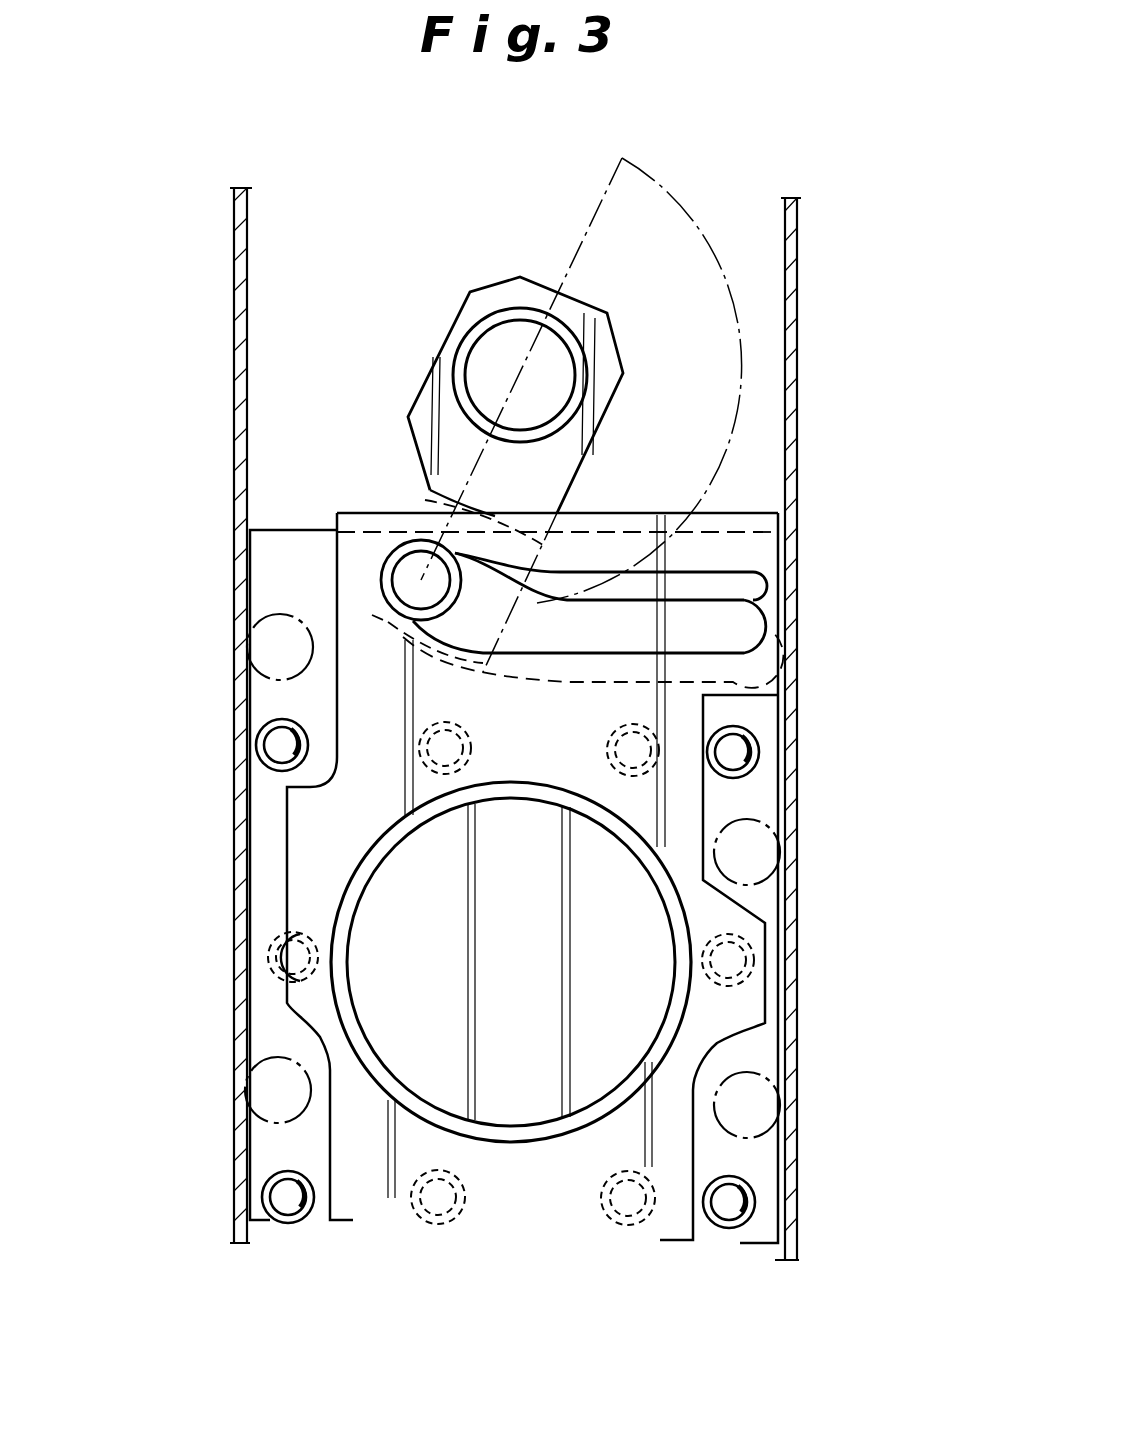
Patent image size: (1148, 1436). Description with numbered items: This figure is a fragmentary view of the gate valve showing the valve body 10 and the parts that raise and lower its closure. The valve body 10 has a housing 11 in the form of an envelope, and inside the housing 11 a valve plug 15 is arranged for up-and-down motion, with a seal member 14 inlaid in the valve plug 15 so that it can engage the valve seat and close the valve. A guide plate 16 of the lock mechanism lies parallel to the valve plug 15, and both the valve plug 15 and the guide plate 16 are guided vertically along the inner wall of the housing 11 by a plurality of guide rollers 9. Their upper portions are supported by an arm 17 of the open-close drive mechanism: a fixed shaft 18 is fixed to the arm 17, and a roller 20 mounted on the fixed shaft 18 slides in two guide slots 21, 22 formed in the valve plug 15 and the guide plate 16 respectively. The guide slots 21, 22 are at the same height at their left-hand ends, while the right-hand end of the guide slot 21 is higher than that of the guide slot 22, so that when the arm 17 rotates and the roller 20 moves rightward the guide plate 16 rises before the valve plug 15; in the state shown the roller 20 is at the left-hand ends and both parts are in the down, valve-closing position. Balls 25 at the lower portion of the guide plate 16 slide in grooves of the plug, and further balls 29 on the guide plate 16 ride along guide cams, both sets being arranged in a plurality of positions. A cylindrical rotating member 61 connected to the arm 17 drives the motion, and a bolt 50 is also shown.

The guide roller 9 is at (270, 612).
The valve body 10 is at (205, 710).
The housing 11 is at (240, 320).
The seal member 14 is at (627, 835).
The valve plug 15 is at (305, 862).
The guide plate 16 is at (270, 1029).
The arm 17 is at (428, 488).
The fixed shaft 18 is at (388, 623).
The roller 20 is at (388, 558).
The guide slot 21 is at (768, 583).
The guide slot 22 is at (770, 621).
The balls 25 is at (462, 730).
The balls 29 is at (262, 770).
The bolt 50 is at (558, 385).
The cylindrical rotating member 61 is at (457, 337).